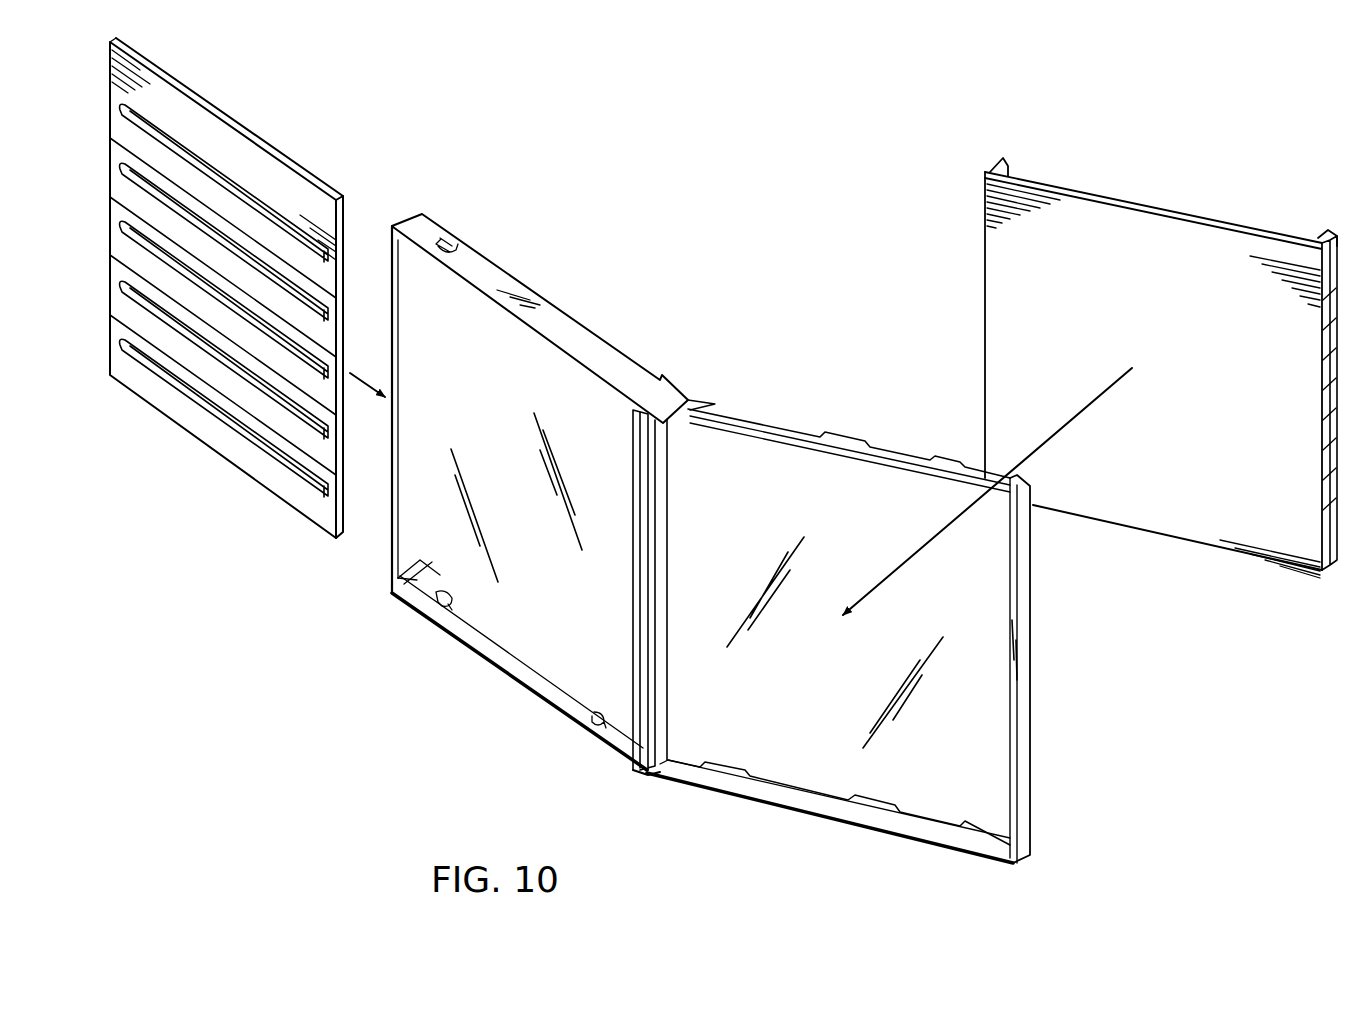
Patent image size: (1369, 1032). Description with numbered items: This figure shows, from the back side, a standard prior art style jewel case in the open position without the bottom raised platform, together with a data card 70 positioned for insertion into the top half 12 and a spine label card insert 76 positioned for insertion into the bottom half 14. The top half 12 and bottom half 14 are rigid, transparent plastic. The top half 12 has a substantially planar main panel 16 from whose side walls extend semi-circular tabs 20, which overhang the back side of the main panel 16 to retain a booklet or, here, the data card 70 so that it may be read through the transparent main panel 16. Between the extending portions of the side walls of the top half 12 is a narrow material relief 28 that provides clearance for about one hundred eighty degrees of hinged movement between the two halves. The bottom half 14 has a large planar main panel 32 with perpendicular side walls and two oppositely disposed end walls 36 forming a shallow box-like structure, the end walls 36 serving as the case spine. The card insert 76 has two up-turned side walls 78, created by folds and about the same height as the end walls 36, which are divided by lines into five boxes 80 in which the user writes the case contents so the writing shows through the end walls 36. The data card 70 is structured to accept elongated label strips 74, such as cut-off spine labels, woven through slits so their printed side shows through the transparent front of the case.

The top half 12 is at (572, 318).
The bottom half 14 is at (822, 772).
The main panel section 16 is at (457, 528).
The semi-circular tabs 20 is at (450, 240).
The material relief 28 is at (645, 772).
The main panel 32 is at (975, 688).
The end walls 36 is at (655, 468).
The data card 70 is at (248, 158).
The label strips 74 is at (265, 337).
The card insert 76 is at (1152, 500).
The side walls 78 is at (990, 163).
The boxes 80 is at (1330, 455).